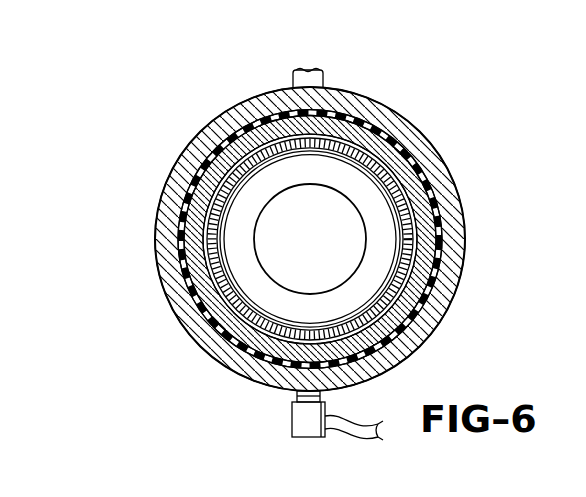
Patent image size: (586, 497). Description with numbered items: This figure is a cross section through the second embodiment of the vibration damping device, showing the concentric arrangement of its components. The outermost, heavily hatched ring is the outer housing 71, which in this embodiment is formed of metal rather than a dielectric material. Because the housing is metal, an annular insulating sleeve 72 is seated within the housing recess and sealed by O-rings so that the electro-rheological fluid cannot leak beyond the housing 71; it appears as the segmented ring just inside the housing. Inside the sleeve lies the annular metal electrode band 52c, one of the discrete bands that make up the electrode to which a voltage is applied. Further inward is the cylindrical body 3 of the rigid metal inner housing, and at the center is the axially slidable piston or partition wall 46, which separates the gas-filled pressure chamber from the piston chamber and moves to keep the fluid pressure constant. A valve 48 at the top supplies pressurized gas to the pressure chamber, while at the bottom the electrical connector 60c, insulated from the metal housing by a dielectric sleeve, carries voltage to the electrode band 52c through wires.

The cylindrical body 3 is at (289, 210).
The piston or partition wall 46 is at (384, 239).
The valve 48 is at (325, 82).
The electrode band 52c is at (266, 239).
The electrical connector 60c is at (303, 418).
The outer housing 71 is at (320, 231).
The annular insulating sleeve 72 is at (264, 239).